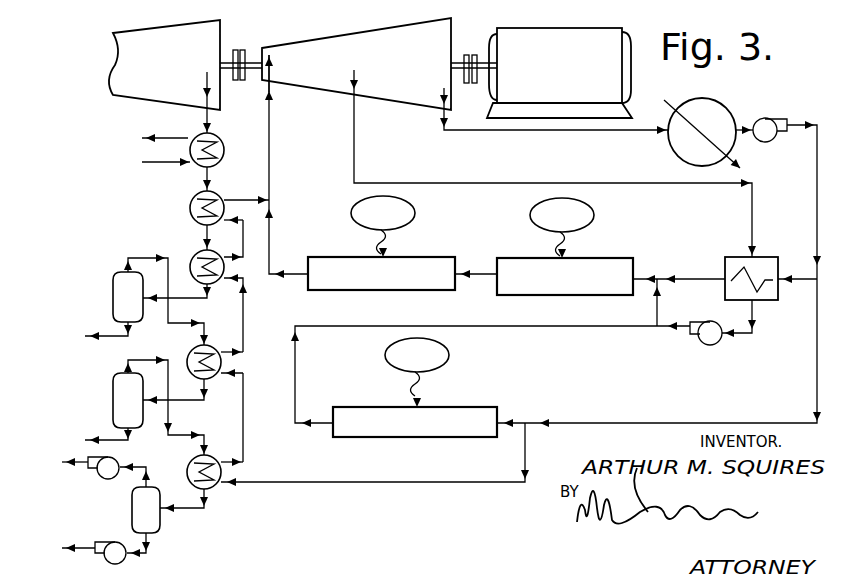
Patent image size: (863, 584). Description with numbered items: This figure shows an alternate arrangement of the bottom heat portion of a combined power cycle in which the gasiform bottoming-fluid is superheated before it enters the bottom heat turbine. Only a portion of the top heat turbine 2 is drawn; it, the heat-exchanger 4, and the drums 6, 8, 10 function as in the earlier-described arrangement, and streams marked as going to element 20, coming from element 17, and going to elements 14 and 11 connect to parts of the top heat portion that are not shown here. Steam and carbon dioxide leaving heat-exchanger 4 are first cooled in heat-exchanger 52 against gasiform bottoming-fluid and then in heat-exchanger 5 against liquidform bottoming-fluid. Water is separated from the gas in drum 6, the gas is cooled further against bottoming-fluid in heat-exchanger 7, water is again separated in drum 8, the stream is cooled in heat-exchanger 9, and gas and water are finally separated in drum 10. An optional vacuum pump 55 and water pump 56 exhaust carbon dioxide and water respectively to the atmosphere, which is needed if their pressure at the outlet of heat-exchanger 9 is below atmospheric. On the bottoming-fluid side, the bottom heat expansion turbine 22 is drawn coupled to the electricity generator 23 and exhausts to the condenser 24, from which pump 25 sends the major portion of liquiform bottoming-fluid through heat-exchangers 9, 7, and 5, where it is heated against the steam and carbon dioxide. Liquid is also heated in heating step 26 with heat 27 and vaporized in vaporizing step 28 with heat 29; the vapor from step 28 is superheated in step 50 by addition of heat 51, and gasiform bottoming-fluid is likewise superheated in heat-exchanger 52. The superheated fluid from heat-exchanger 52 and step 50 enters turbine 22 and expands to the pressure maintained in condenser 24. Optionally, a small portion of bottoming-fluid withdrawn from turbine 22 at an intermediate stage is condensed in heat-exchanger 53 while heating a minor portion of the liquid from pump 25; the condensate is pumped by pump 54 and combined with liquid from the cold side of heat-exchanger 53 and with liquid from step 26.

The top heat turbine 2 is at (164, 71).
The bottom heat expansion turbine 22 is at (408, 64).
The electricity generator 23 is at (565, 78).
The condenser 24 is at (707, 107).
The pump 25 is at (780, 118).
The heat-exchanger 53 is at (768, 258).
The pump 54 is at (704, 345).
The heat 51 is at (414, 206).
The superheating step 50 is at (425, 257).
The heat 29 is at (593, 208).
The vaporizing step 28 is at (610, 258).
The heat 27 is at (448, 352).
The heating step 26 is at (455, 407).
The heat-exchanger 4 is at (219, 141).
The heat-exchanger 52 is at (220, 197).
The heat-exchanger 5 is at (197, 254).
The drum 6 is at (133, 309).
The heat-exchanger 7 is at (215, 347).
The drum 8 is at (133, 410).
The heat-exchanger 9 is at (215, 457).
The drum 10 is at (155, 520).
The vacuum pump 55 is at (100, 477).
The water pump 56 is at (105, 540).
The stream destination (to 20) 20 is at (124, 141).
The stream source (from 17) 17 is at (119, 163).
The stream destination (to 14) 14 is at (54, 338).
The stream destination (to 11) 11 is at (54, 442).